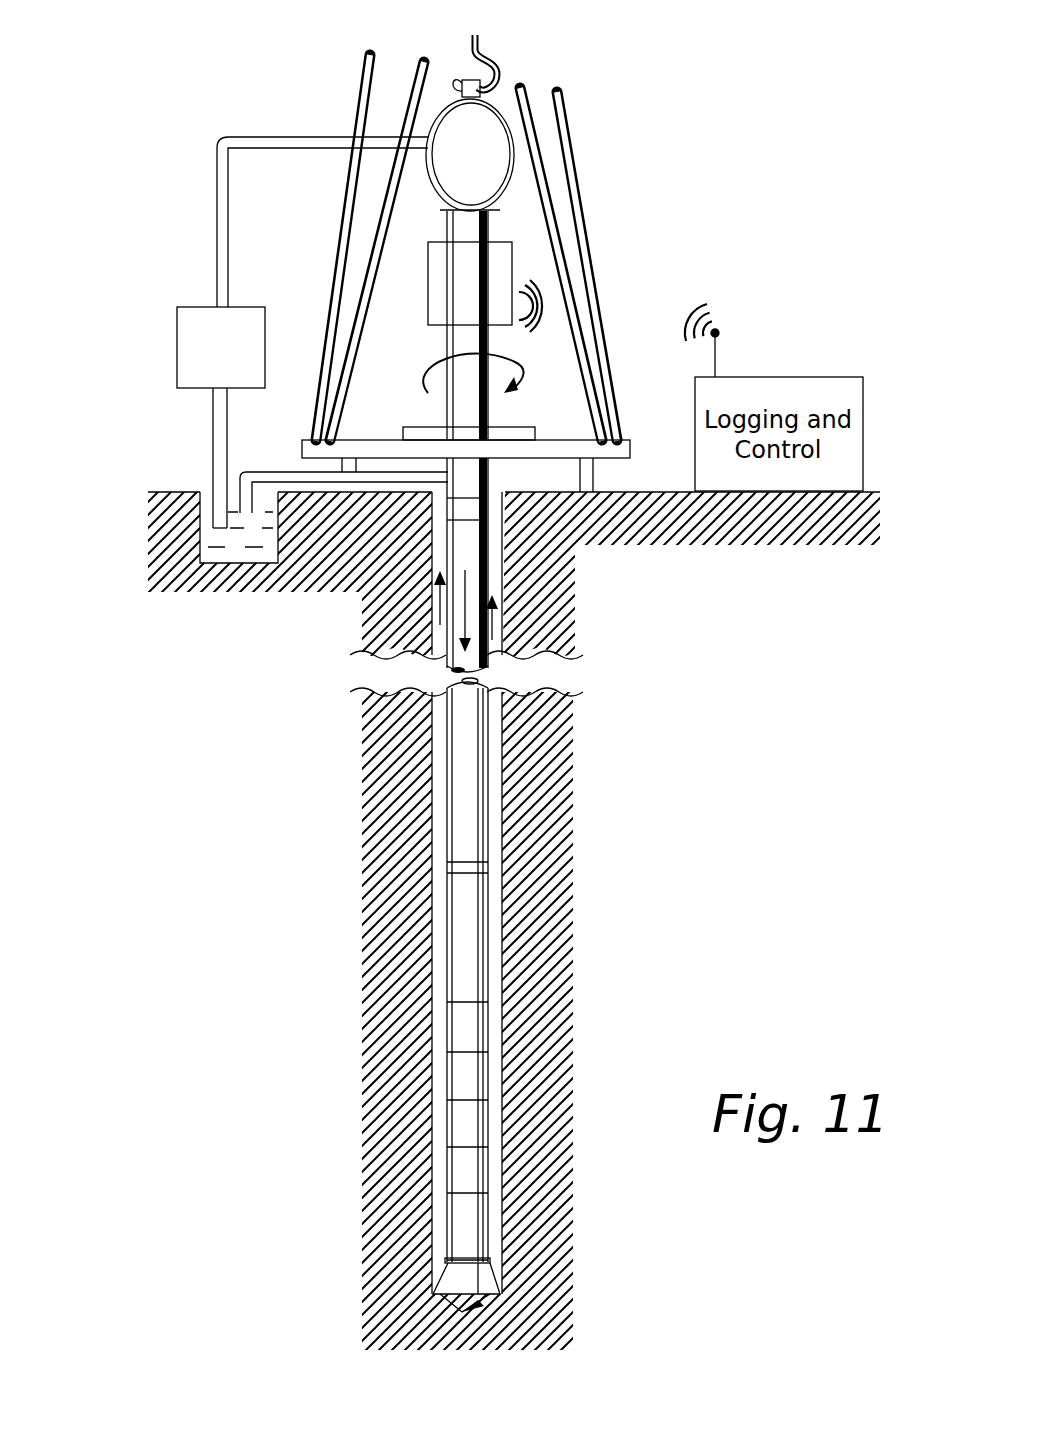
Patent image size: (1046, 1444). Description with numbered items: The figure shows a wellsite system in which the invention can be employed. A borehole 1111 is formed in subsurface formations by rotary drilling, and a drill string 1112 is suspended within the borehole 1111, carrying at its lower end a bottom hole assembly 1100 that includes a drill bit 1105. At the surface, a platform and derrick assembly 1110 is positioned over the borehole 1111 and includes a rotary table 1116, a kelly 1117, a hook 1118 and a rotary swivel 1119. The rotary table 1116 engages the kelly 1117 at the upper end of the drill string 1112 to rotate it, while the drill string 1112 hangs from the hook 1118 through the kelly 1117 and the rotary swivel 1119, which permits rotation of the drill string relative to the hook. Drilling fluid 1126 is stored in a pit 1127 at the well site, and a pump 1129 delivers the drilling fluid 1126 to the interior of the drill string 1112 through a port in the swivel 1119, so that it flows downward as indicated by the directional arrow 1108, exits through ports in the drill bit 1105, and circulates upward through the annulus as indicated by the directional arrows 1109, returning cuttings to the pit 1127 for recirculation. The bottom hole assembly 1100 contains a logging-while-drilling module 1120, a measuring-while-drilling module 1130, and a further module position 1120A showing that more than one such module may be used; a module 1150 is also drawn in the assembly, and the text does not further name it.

The bottom hole assembly 1100 is at (468, 998).
The drill bit 1105 is at (480, 1283).
The directional arrow 1108 is at (440, 652).
The directional arrows 1109 is at (436, 624).
The platform and derrick assembly 1110 is at (628, 132).
The borehole 1111 is at (496, 575).
The drill string 1112 is at (462, 472).
The rotary table 1116 is at (510, 428).
The kelly 1117 is at (456, 342).
The hook 1118 is at (470, 45).
The rotary swivel 1119 is at (500, 169).
The logging-while-drilling (LWD) module 1120 is at (475, 1072).
The LWD and/or MWD module 1120A is at (470, 1168).
The drilling fluid 1126 is at (240, 556).
The pit 1127 is at (208, 486).
The pump 1129 is at (182, 379).
The measuring-while-drilling (MWD) module 1130 is at (470, 1121).
The telemetry module 1150 is at (483, 1226).